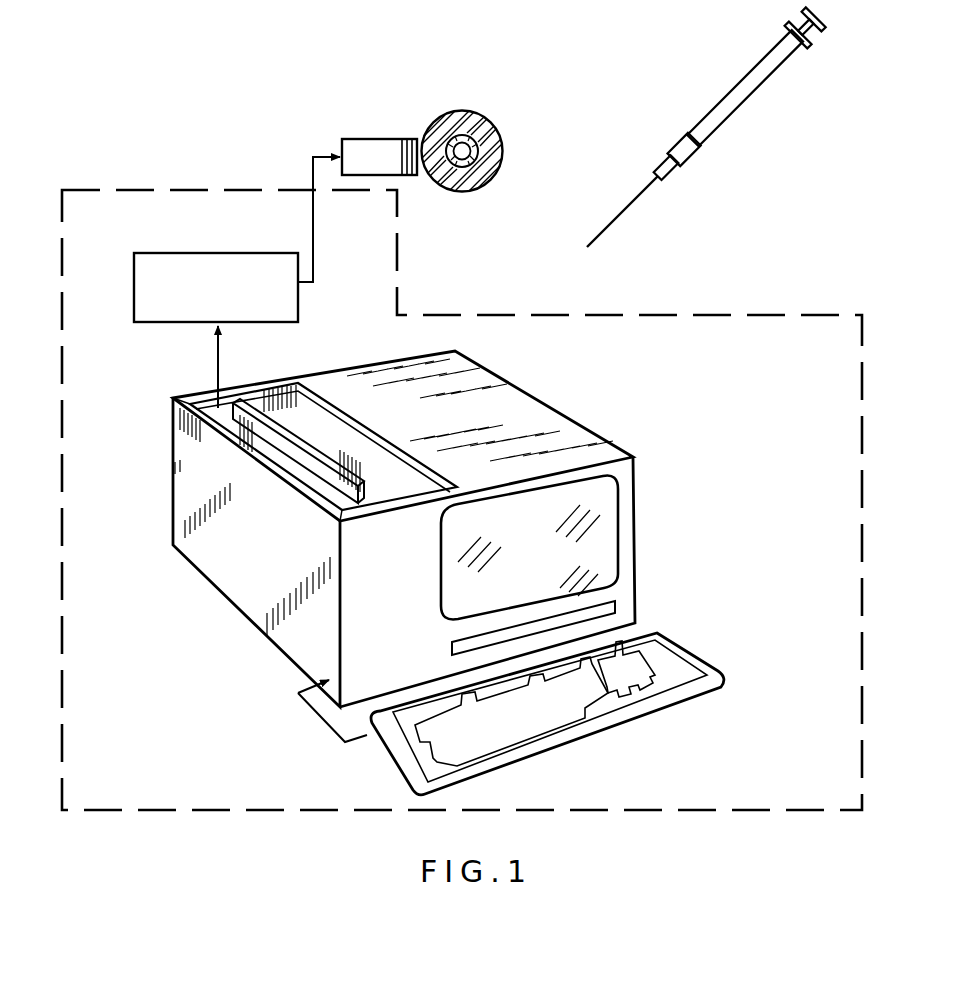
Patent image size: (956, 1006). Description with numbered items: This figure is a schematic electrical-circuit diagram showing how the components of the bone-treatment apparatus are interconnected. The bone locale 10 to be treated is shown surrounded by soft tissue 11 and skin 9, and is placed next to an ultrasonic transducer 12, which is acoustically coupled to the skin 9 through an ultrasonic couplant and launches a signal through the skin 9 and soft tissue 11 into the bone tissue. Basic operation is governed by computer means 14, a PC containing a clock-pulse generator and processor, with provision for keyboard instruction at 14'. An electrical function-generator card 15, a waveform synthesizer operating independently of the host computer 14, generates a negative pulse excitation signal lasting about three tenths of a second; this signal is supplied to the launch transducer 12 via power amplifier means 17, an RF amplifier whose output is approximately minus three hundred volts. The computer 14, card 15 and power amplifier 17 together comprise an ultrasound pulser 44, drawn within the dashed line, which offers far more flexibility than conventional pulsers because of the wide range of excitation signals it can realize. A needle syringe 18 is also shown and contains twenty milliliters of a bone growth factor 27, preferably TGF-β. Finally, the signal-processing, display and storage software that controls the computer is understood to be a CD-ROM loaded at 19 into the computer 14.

The ultrasound pulser 44 is at (100, 190).
The power amplifier means 17 is at (222, 253).
The ultrasonic transducer 12 is at (358, 139).
The skin 9 is at (497, 131).
The bone locale 10 is at (476, 189).
The soft tissue 11 is at (442, 172).
The bone growth factor 27 is at (690, 125).
The needle syringe 18 is at (622, 213).
The computer means 14 is at (362, 546).
The electrical function-generator card 15 is at (333, 480).
The CD-ROM loading location 19 is at (622, 609).
The keyboard instruction 14' is at (567, 702).